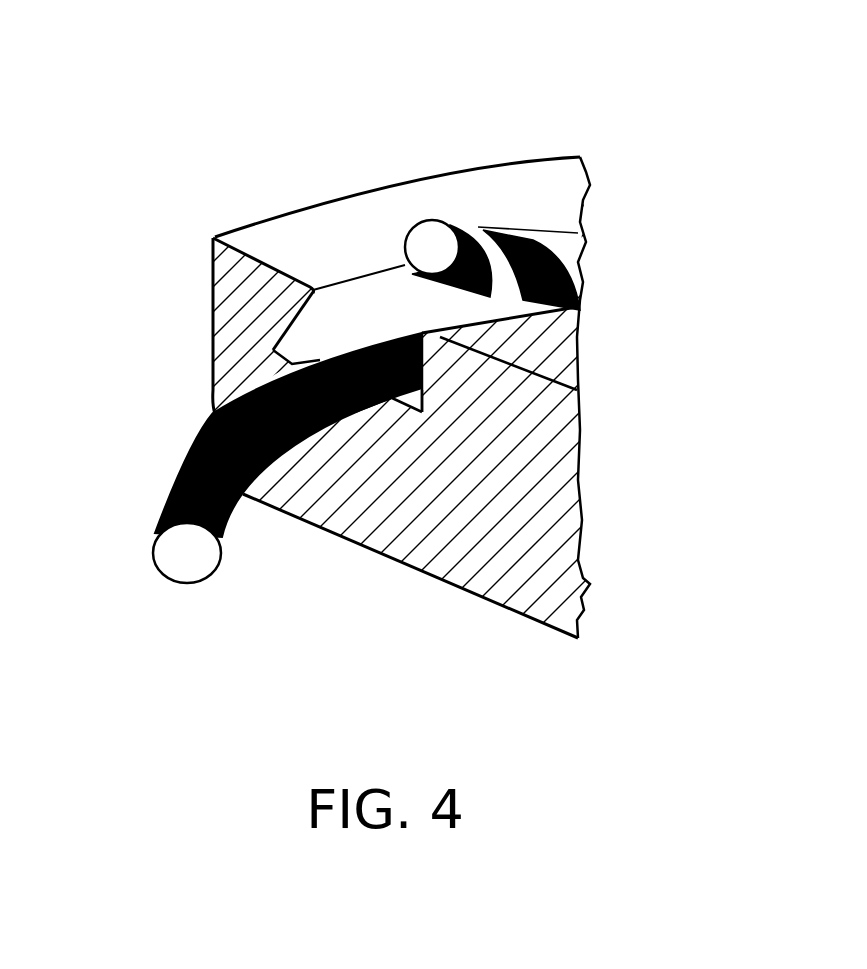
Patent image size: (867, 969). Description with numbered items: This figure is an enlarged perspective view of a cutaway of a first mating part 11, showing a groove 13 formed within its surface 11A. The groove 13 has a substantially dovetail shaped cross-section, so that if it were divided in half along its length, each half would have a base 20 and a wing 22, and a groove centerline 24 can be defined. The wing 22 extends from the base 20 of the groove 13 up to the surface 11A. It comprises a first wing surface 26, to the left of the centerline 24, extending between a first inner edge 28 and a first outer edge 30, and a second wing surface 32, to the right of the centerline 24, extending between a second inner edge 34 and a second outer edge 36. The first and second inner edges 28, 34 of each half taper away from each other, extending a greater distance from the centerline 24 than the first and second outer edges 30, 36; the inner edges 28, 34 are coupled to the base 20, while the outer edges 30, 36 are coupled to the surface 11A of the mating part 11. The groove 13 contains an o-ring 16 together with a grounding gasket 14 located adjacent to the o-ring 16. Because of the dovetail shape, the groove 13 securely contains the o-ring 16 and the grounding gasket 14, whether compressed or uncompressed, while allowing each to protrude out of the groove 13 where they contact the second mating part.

The first mating part 11 is at (275, 213).
The surface 11A is at (304, 257).
The groove 13 is at (367, 278).
The grounding gasket 14 is at (418, 265).
The o-ring 16 is at (172, 569).
The base 20 is at (403, 397).
The wing 22 is at (252, 307).
The groove centerline 24 is at (583, 272).
The first wing surface 26 is at (285, 323).
The first inner edge 28 is at (273, 352).
The first outer edge 30 is at (213, 250).
The second wing surface 32 is at (420, 388).
The second inner edge 34 is at (424, 400).
The second outer edge 36 is at (440, 337).